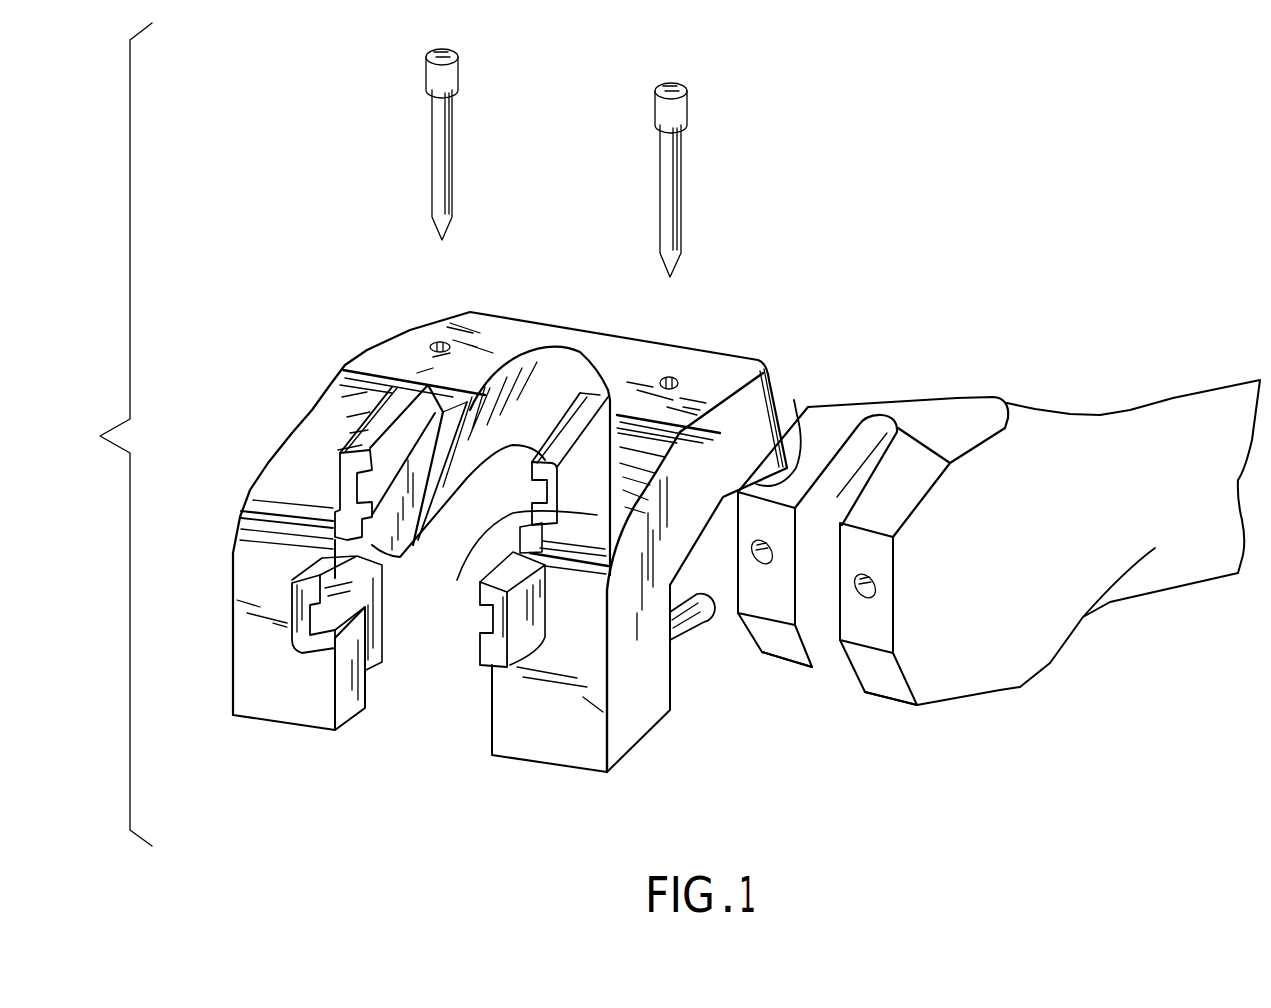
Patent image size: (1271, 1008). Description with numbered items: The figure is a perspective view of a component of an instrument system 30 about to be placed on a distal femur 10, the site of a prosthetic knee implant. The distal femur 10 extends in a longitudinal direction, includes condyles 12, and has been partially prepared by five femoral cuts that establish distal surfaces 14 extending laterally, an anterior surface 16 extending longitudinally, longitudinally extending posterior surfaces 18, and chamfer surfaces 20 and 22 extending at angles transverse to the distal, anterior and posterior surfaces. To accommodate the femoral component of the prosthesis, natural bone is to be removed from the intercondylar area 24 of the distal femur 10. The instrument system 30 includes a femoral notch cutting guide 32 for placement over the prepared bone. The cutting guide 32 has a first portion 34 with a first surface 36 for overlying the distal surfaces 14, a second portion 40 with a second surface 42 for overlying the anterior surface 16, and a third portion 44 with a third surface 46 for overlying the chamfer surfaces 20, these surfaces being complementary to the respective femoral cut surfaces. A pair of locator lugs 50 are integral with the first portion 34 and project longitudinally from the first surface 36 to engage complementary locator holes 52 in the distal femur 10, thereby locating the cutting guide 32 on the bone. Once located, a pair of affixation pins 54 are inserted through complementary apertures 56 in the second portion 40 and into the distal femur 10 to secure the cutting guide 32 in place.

The distal femur 10 is at (1177, 387).
The condyles 12 is at (1000, 640).
The distal surfaces 14 is at (755, 595).
The anterior surface 16 is at (977, 413).
The posterior surfaces 18 is at (777, 660).
The chamfer surfaces 20 is at (833, 430).
The chamfer surfaces 22 is at (773, 642).
The intercondylar area 24 is at (840, 490).
The instrument system 30 is at (335, 363).
The femoral notch cutting guide 32 is at (283, 473).
The first portion 34 is at (250, 595).
The first surface 36 is at (367, 697).
The second portion 40 is at (505, 338).
The second surface 42 is at (783, 427).
The third portion 44 is at (328, 423).
The third surface 46 is at (670, 590).
The locator lugs 50 is at (683, 637).
The locator holes 52 is at (860, 593).
The affixation pins 54 is at (453, 125).
The apertures 56 is at (438, 342).